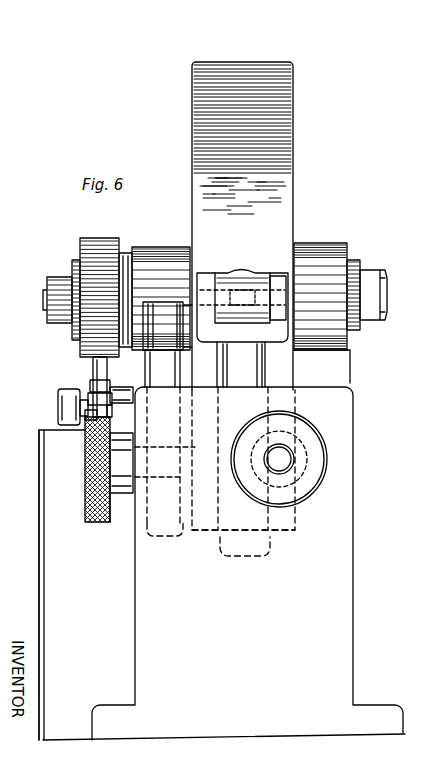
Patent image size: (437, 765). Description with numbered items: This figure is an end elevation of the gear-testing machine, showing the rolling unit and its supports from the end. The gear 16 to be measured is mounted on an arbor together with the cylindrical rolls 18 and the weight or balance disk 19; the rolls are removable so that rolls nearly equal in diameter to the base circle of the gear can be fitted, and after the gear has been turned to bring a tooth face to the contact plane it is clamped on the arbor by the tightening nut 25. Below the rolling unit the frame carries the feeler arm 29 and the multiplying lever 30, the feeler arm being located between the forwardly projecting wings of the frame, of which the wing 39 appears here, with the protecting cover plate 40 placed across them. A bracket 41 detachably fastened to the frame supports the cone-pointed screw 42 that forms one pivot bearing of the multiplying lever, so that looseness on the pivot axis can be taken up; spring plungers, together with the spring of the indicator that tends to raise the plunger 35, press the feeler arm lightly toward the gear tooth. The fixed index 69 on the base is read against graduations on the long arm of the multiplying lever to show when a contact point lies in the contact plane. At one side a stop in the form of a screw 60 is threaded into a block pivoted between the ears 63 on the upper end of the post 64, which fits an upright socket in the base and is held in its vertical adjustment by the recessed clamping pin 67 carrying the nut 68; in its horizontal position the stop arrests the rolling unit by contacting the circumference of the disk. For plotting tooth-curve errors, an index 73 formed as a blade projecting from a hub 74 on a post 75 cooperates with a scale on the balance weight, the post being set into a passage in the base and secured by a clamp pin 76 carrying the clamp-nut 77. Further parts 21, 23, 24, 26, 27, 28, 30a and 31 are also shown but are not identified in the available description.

The gear 16 is at (98, 240).
The cylindrical rolls 18 is at (160, 247).
The balance disk 19 is at (283, 116).
The shaft 21 is at (125, 253).
The nut 23 is at (372, 282).
The collar 24 is at (352, 270).
The tightening nut 25 is at (62, 284).
The collar 26 is at (75, 265).
The bearing block 27 is at (342, 363).
The frame 28 is at (332, 645).
The feeler arm 29 is at (98, 378).
The multiplying lever 30 is at (90, 396).
The collar 30a is at (96, 384).
The knurled wheel 31 is at (86, 492).
The plunger 35 is at (90, 419).
The wing 39 is at (60, 503).
The protecting cover plate 40 is at (39, 473).
The bracket 41 is at (60, 402).
The cone-pointed screw 42 is at (60, 411).
The stop screw 60 is at (238, 273).
The ears 63 is at (272, 297).
The post 64 is at (245, 358).
The clamping pin 67 is at (282, 459).
The nut 68 is at (307, 483).
The fixed index 69 is at (133, 404).
The index 73 is at (185, 303).
The hub 74 is at (149, 347).
The post 75 is at (172, 345).
The clamp pin 76 is at (202, 537).
The clamp-nut 77 is at (112, 508).